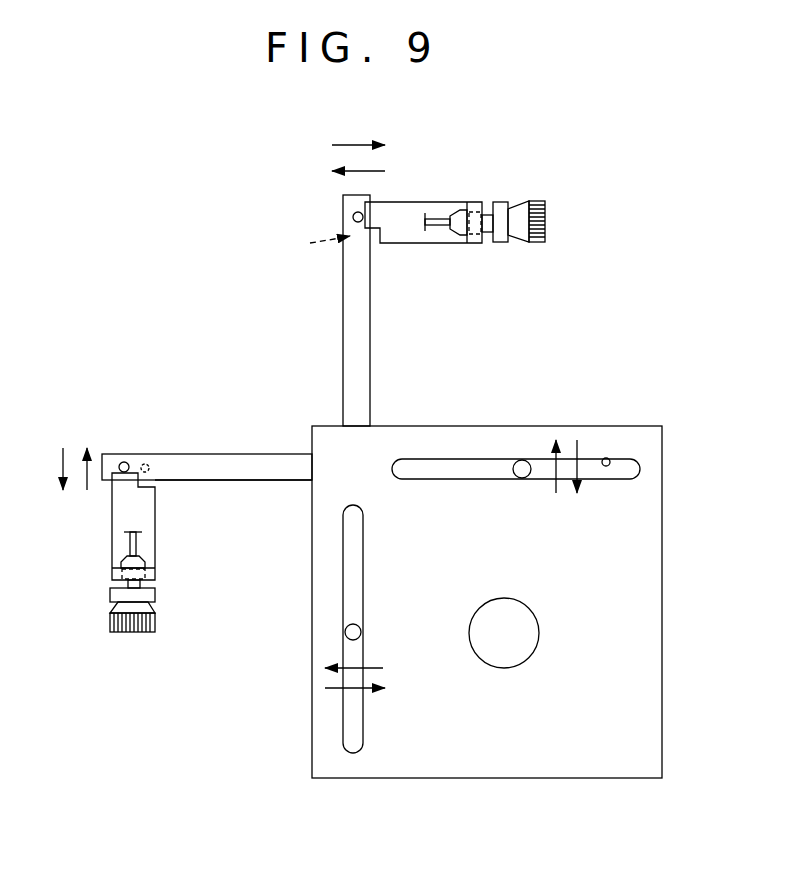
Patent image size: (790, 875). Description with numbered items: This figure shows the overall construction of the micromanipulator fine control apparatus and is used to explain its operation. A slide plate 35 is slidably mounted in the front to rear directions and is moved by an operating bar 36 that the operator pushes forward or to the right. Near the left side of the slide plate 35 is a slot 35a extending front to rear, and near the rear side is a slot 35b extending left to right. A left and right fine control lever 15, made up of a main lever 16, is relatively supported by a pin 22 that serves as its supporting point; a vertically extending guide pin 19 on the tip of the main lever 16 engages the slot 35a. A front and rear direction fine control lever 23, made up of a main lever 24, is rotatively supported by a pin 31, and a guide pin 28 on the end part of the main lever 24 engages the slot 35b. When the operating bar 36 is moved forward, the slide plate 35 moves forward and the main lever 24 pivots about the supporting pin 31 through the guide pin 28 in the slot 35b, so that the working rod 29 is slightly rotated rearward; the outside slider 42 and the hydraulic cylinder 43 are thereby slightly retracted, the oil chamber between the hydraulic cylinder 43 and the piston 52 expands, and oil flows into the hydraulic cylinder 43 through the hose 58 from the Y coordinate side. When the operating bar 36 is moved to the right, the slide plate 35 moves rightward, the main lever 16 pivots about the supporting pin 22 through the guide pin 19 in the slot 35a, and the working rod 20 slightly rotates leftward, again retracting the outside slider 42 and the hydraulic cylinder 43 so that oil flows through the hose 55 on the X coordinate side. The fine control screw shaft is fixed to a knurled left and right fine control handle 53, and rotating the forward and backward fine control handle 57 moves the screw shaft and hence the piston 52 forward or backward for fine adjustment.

The left and right fine control lever 15 is at (322, 310).
The main lever 16 is at (362, 330).
The guide pin 19 is at (345, 630).
The working rod 20 is at (352, 217).
The pin 22 is at (311, 243).
The front and rear direction fine control lever 23 is at (242, 485).
The main lever 24 is at (257, 460).
The guide pin 28 is at (522, 459).
The working rod 29 is at (124, 462).
The pin 31 is at (147, 463).
The slide plate 35 is at (648, 565).
The slot 35a is at (347, 720).
The slot 35b is at (607, 458).
The operating bar 36 is at (539, 647).
The outside slider 42 is at (395, 207).
The hydraulic cylinder 43 is at (463, 205).
The piston 52 is at (490, 213).
The left and right fine control handle 53 is at (545, 232).
The hose 55 is at (438, 212).
The forward and backward fine control handle 57 is at (130, 635).
The hose 58 is at (125, 538).